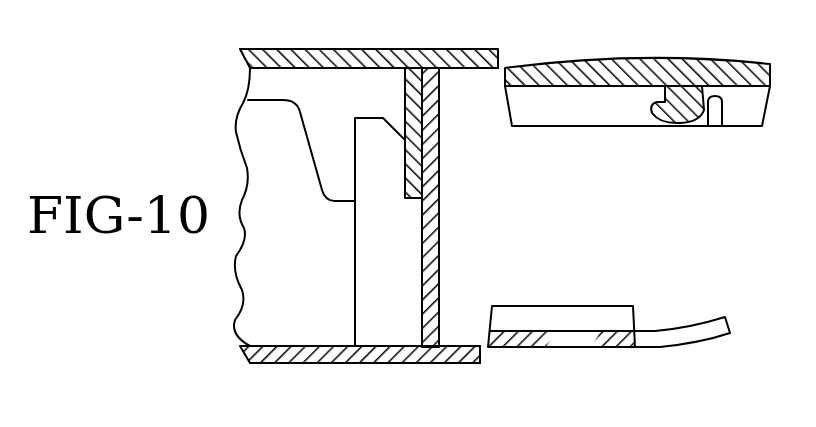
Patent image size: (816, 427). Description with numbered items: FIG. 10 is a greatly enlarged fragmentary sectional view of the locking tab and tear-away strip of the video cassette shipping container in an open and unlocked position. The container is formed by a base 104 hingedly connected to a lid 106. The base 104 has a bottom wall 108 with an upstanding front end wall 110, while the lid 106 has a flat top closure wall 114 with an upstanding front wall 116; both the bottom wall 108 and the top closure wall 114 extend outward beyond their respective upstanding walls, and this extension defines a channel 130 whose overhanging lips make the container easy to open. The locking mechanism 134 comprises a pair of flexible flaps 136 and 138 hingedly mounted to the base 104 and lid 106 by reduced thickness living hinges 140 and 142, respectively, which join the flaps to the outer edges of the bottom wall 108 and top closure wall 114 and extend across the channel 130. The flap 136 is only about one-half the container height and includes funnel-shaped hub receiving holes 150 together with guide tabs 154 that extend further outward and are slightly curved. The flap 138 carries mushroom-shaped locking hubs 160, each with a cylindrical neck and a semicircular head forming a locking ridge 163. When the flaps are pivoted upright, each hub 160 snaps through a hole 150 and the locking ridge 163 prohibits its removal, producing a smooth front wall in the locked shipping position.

The base 104 is at (347, 377).
The lid 106 is at (333, 208).
The bottom wall 108 is at (391, 367).
The front end wall 110 is at (421, 277).
The top closure wall 114 is at (360, 50).
The front wall 116 is at (412, 93).
The channel 130 is at (457, 229).
The locking mechanism 134 is at (638, 216).
The flap 136 is at (622, 352).
The flap 138 is at (637, 97).
The living hinge 140 is at (485, 349).
The living hinge 142 is at (505, 66).
The hub receiving hole 150 is at (604, 357).
The guide tab 154 is at (697, 337).
The locking hub 160 is at (667, 126).
The locking ridge 163 is at (719, 108).